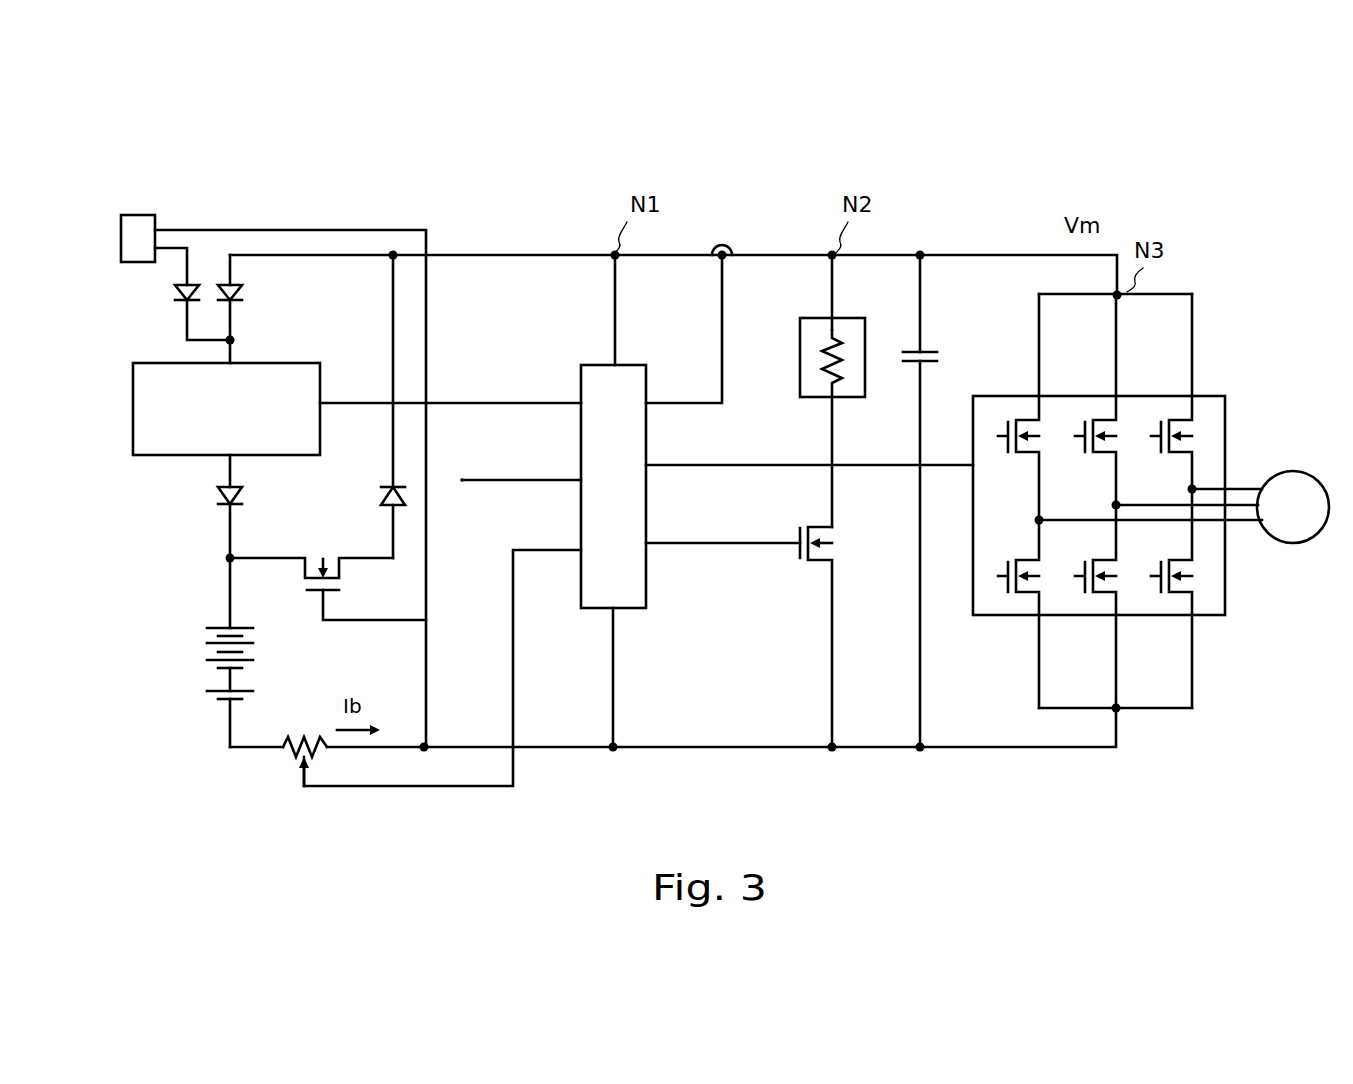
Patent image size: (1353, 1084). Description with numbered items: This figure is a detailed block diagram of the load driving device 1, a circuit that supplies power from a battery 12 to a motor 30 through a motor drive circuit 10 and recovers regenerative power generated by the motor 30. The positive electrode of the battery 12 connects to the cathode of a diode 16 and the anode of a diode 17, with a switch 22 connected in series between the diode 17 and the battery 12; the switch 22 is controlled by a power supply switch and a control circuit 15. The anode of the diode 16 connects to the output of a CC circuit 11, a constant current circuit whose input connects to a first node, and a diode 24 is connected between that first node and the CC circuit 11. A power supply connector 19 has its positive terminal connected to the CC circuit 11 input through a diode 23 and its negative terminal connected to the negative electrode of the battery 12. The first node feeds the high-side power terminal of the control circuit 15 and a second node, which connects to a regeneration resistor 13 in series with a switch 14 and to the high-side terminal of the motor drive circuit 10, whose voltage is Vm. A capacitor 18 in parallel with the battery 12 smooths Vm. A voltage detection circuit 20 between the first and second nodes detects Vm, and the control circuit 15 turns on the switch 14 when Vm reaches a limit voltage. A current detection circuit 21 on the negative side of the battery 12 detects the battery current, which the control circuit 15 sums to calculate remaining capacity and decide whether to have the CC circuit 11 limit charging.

The load driving device 1 is at (670, 140).
The motor drive circuit 10 is at (1007, 618).
The CC circuit 11 is at (133, 406).
The battery 12 is at (212, 652).
The regeneration resistor 13 is at (806, 398).
The switch 14 is at (813, 566).
The control circuit 15 is at (581, 425).
The diode 16 is at (216, 495).
The diode 17 is at (380, 497).
The capacitor 18 is at (930, 350).
The power supply connector 19 is at (121, 245).
The voltage detection circuit 20 is at (728, 245).
The current detection circuit 21 is at (306, 728).
The switch 22 is at (314, 596).
The diode 23 is at (177, 292).
The diode 24 is at (245, 292).
The motor 30 is at (1304, 471).